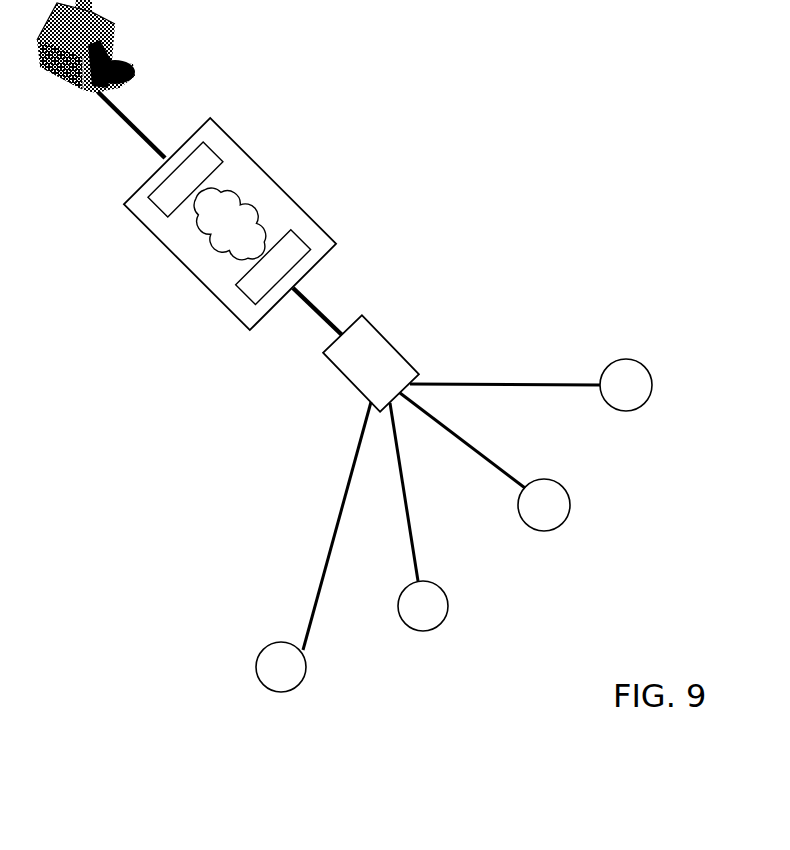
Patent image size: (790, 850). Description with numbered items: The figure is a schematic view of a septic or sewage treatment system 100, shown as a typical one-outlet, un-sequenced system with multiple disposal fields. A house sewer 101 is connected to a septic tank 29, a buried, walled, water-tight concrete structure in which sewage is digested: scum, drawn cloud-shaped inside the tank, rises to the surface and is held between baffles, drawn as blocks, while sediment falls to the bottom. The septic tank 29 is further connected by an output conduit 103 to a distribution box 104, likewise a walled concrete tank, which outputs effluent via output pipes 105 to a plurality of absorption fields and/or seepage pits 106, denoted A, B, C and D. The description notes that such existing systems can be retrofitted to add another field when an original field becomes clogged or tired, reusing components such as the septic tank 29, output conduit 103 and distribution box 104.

The septic tank 29 is at (272, 180).
The septic system 100 is at (474, 134).
The house sewer 101 is at (128, 127).
The output conduit 103 is at (320, 306).
The distribution box 104 is at (335, 367).
The output pipes 105 is at (527, 385).
The absorption fields and/or seepage pits 106 is at (625, 412).